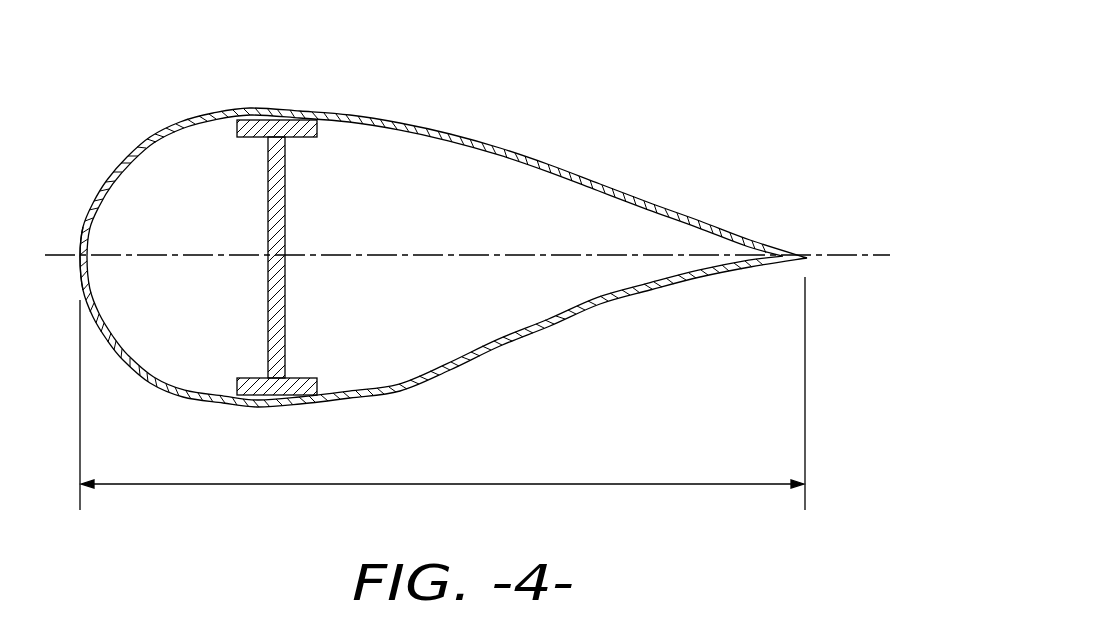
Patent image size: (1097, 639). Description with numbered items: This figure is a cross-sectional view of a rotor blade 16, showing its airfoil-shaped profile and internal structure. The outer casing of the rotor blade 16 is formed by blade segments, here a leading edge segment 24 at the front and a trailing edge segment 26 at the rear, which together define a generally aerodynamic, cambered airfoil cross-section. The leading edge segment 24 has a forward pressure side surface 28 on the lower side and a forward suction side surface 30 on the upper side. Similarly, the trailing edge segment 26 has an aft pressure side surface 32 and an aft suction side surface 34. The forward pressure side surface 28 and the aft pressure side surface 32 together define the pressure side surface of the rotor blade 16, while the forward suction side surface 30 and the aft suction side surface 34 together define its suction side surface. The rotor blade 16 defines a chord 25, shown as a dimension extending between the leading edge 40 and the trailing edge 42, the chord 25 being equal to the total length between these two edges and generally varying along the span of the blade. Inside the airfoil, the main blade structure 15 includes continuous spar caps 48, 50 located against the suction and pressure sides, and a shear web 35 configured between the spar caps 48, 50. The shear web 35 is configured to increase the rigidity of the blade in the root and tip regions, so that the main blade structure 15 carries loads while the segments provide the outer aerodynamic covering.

The rotor blade 16 is at (683, 78).
The leading edge segment 24 is at (100, 181).
The trailing edge segment 26 is at (640, 195).
The forward pressure side surface 28 is at (163, 374).
The forward suction side surface 30 is at (160, 140).
The aft pressure side surface 32 is at (510, 338).
The aft suction side surface 34 is at (503, 150).
The leading edge 40 is at (78, 254).
The trailing edge 42 is at (806, 258).
The chord 25 is at (565, 484).
The shear web 35 is at (267, 234).
The main blade structure 15 is at (258, 328).
The spar cap 50 is at (293, 140).
The spar cap 48 is at (297, 377).